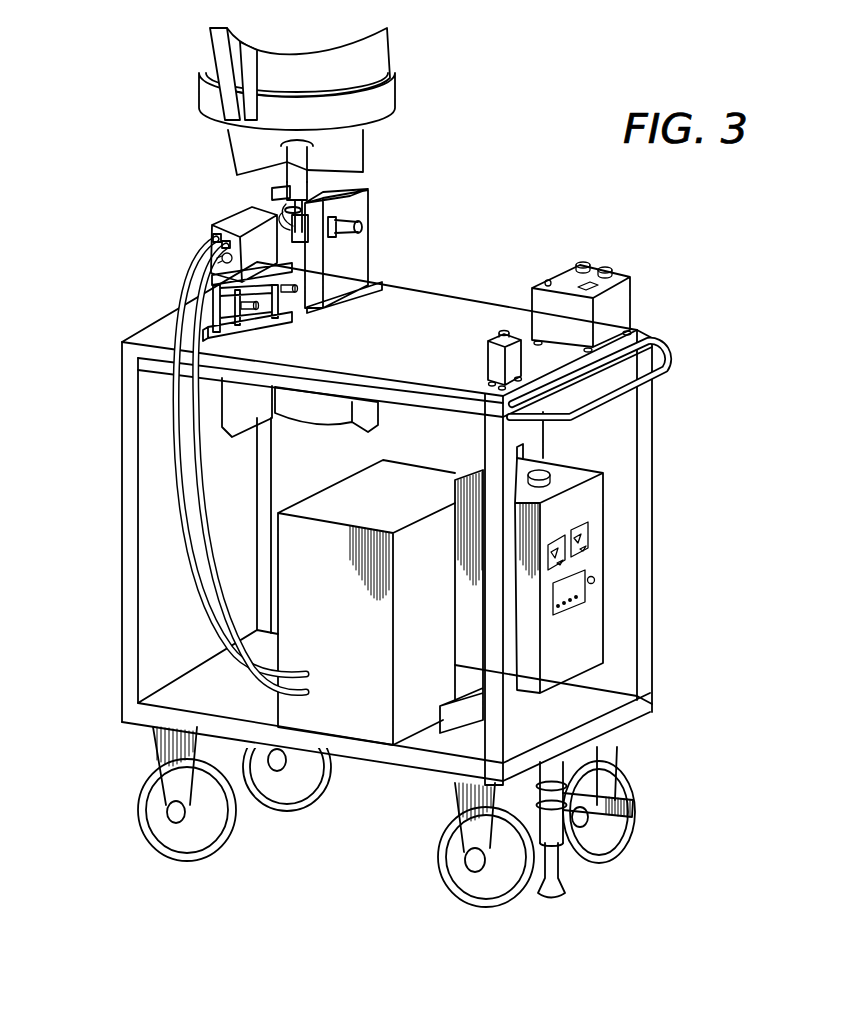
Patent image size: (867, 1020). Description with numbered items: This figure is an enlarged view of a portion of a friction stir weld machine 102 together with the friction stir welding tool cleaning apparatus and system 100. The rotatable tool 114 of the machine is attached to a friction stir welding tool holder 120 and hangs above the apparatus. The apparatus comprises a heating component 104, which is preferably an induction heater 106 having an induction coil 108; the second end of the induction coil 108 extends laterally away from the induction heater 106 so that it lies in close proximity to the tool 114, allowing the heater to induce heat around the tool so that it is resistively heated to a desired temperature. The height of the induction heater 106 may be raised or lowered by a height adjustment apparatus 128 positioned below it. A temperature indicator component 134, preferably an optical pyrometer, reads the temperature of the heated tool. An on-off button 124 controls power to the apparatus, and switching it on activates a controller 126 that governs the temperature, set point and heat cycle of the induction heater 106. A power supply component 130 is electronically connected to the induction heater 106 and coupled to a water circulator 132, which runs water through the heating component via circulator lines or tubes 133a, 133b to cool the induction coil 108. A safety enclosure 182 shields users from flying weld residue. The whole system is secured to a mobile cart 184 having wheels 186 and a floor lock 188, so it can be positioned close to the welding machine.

The cleaning apparatus and system 100 is at (688, 232).
The friction stir weld machine 102 is at (397, 92).
The heating component 104 is at (212, 226).
The induction heater 106 is at (213, 238).
The induction coil 108 is at (292, 213).
The rotatable tool 114 is at (276, 196).
The friction stir welding tool holder 120 is at (297, 167).
The on-off button 124 is at (522, 362).
The controller 126 is at (633, 303).
The height adjustment apparatus 128 is at (205, 313).
The power supply component 130 is at (590, 630).
The water circulator 132 is at (363, 708).
The circulator line 133a is at (173, 398).
The circulator line 133b is at (197, 446).
The temperature indicator component 134 is at (366, 227).
The safety enclosure 182 is at (363, 263).
The mobile cart 184 is at (128, 603).
The wheels 186 is at (183, 838).
The floor lock 188 is at (562, 868).